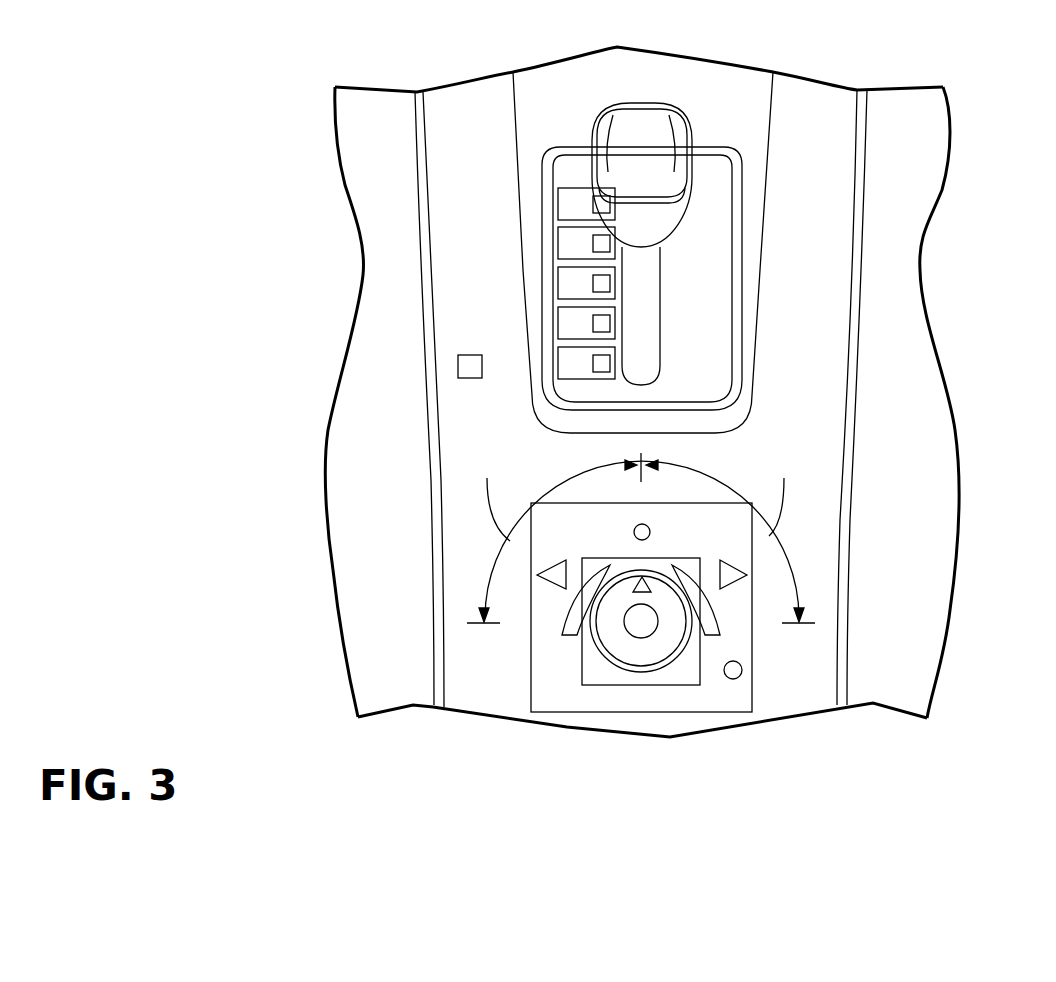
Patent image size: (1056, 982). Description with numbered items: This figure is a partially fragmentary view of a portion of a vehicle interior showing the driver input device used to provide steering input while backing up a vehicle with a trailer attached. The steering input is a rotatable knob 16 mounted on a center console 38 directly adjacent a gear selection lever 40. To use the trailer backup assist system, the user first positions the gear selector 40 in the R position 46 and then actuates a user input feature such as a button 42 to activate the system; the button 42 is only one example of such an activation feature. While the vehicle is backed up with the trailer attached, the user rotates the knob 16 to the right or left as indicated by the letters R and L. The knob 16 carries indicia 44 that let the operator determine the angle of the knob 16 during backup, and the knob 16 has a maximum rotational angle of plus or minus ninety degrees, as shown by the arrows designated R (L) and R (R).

The rotatable knob 16 is at (598, 662).
The center console 38 is at (797, 537).
The gear selection lever 40 is at (702, 303).
The button 42 is at (458, 366).
The indicia 44 is at (646, 590).
The R position 46 is at (562, 240).